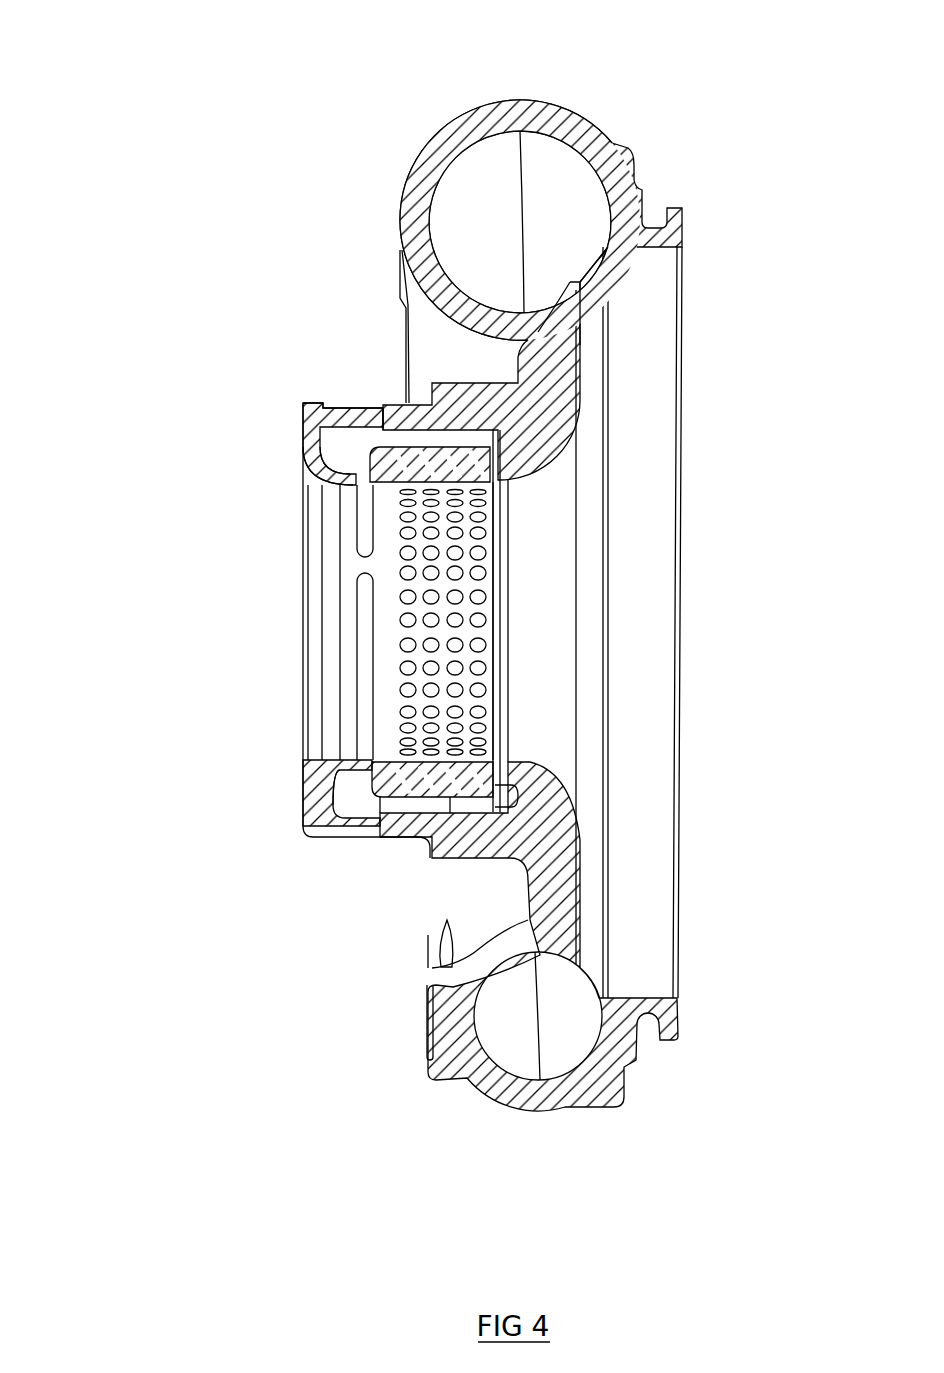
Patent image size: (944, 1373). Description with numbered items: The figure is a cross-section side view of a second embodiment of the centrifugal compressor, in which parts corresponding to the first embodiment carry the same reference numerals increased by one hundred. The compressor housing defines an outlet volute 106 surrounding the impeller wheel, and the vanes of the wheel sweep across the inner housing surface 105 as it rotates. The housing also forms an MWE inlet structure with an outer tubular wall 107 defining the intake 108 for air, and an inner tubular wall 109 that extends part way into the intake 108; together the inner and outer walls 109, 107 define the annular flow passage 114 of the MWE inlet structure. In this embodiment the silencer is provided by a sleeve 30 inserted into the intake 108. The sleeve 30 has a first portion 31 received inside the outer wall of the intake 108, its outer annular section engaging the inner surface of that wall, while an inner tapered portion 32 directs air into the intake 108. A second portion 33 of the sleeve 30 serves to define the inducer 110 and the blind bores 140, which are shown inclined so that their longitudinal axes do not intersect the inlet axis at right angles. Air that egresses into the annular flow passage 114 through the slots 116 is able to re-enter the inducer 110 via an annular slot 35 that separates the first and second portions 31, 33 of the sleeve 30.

The sleeve 30 is at (303, 816).
The first portion 31 is at (303, 432).
The inner tapered portion 32 is at (303, 468).
The second portion 33 is at (400, 420).
The annular slot 35 is at (368, 515).
The inner housing surface 105 is at (555, 457).
The outlet volute 106 is at (498, 173).
The outer tubular wall 107 is at (408, 418).
The intake 108 is at (450, 621).
The inner tubular wall 109 is at (420, 812).
The inducer 110 is at (372, 803).
The annular flow passage 114 is at (400, 803).
The slots 116 is at (502, 503).
The blind bores 140 is at (770, 753).